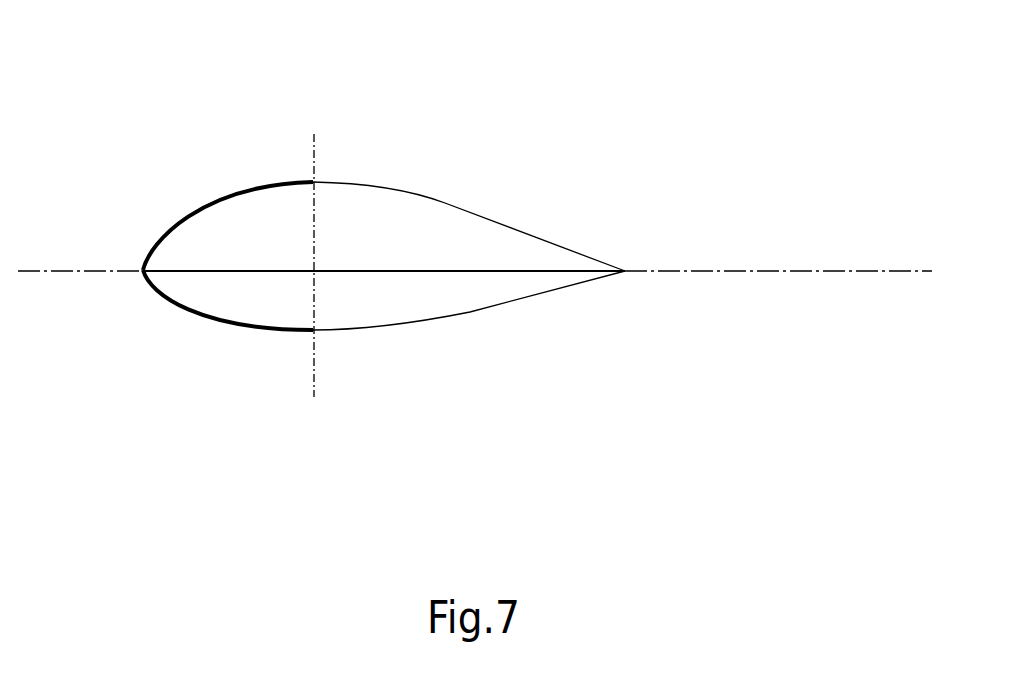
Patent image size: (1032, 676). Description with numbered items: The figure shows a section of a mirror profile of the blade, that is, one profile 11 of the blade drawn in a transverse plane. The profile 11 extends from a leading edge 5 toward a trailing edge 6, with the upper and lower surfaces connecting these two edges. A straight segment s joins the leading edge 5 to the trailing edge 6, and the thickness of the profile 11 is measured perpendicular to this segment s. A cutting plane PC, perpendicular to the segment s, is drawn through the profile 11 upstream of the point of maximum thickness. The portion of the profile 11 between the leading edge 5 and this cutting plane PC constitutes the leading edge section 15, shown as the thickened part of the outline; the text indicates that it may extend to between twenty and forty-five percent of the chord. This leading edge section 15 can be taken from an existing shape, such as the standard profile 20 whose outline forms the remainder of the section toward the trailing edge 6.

The leading edge 5 is at (143, 269).
The trailing edge 6 is at (625, 271).
The profile 11 is at (346, 290).
The leading edge section 15 is at (217, 196).
The standard profile 20 is at (432, 198).
The segment s is at (488, 272).
The cutting plane PC is at (314, 368).